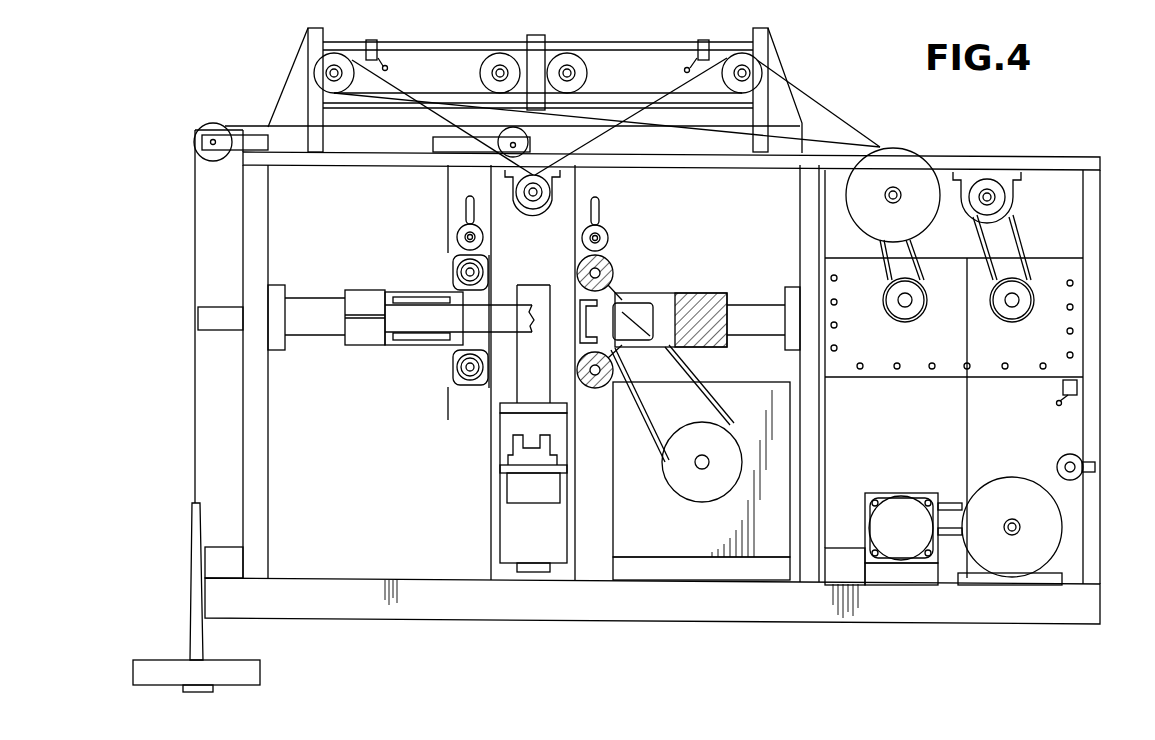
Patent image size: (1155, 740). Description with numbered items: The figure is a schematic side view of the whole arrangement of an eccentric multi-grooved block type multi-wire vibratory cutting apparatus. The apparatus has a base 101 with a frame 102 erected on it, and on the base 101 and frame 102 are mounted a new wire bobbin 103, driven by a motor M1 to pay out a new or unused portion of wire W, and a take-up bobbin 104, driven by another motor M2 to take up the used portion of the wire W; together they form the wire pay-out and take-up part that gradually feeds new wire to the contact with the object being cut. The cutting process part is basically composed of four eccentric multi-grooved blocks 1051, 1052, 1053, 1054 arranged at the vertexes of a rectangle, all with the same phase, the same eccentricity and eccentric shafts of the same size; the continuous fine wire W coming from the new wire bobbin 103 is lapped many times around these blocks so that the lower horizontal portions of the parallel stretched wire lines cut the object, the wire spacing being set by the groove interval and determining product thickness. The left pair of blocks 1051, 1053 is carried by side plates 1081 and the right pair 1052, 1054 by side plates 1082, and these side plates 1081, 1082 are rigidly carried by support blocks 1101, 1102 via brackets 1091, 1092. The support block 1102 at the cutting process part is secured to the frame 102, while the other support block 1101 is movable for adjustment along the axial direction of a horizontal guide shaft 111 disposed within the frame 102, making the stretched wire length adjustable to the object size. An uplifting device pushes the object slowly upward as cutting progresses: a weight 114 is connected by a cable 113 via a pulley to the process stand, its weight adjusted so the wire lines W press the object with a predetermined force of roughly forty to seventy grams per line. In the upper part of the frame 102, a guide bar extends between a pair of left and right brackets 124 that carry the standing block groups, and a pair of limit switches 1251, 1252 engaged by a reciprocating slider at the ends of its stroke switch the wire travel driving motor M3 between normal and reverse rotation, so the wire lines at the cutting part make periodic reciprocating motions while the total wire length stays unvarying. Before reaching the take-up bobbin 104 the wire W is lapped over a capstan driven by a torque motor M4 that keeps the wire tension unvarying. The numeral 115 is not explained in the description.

The base 101 is at (333, 604).
The frame 102 is at (303, 166).
The new wire bobbin 103 is at (888, 152).
The take-up bobbin 104 is at (1008, 485).
The eccentric multi-grooved block 1051 is at (470, 381).
The eccentric multi-grooved block 1052 is at (615, 386).
The eccentric multi-grooved block 1053 is at (453, 262).
The eccentric multi-grooved block 1054 is at (613, 260).
The side plates 1081 is at (453, 286).
The side plates 1082 is at (607, 300).
The bracket 1091 is at (410, 346).
The bracket 1092 is at (653, 298).
The support block 1101 is at (355, 346).
The support block 1102 is at (706, 293).
The horizontal guide shaft 111 is at (307, 302).
The cable 113 is at (195, 258).
The weight 114 is at (260, 672).
The guide roller pin 115 is at (456, 236).
The brackets 124 is at (313, 45).
The limit switch 1251 is at (372, 40).
The limit switch 1252 is at (702, 40).
The wire W is at (818, 102).
The motor M1 is at (900, 310).
The motor M2 is at (898, 498).
The wire travel driving motor M3 is at (680, 487).
The torque motor M4 is at (1010, 312).